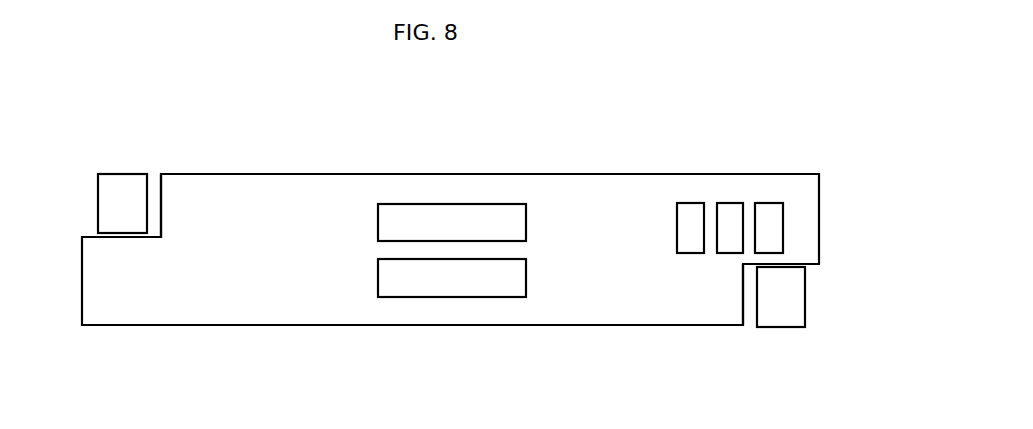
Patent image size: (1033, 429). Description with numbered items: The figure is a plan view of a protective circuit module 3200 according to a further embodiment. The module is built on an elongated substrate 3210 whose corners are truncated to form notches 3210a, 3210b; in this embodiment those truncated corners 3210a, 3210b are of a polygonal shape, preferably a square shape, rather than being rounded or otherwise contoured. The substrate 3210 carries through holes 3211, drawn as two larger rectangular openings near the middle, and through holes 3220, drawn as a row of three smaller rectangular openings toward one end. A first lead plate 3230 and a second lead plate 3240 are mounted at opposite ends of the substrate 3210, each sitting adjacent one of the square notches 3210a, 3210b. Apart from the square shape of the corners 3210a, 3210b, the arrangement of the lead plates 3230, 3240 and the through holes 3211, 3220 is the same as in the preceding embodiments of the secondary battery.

The protective circuit module 3200 is at (846, 152).
The substrate 3210 is at (590, 172).
The truncated corner 3210a is at (748, 310).
The truncated corner 3210b is at (157, 195).
The through holes 3211 is at (443, 202).
The through holes 3220 is at (730, 210).
The first lead plate 3230 is at (793, 299).
The second lead plate 3240 is at (105, 195).